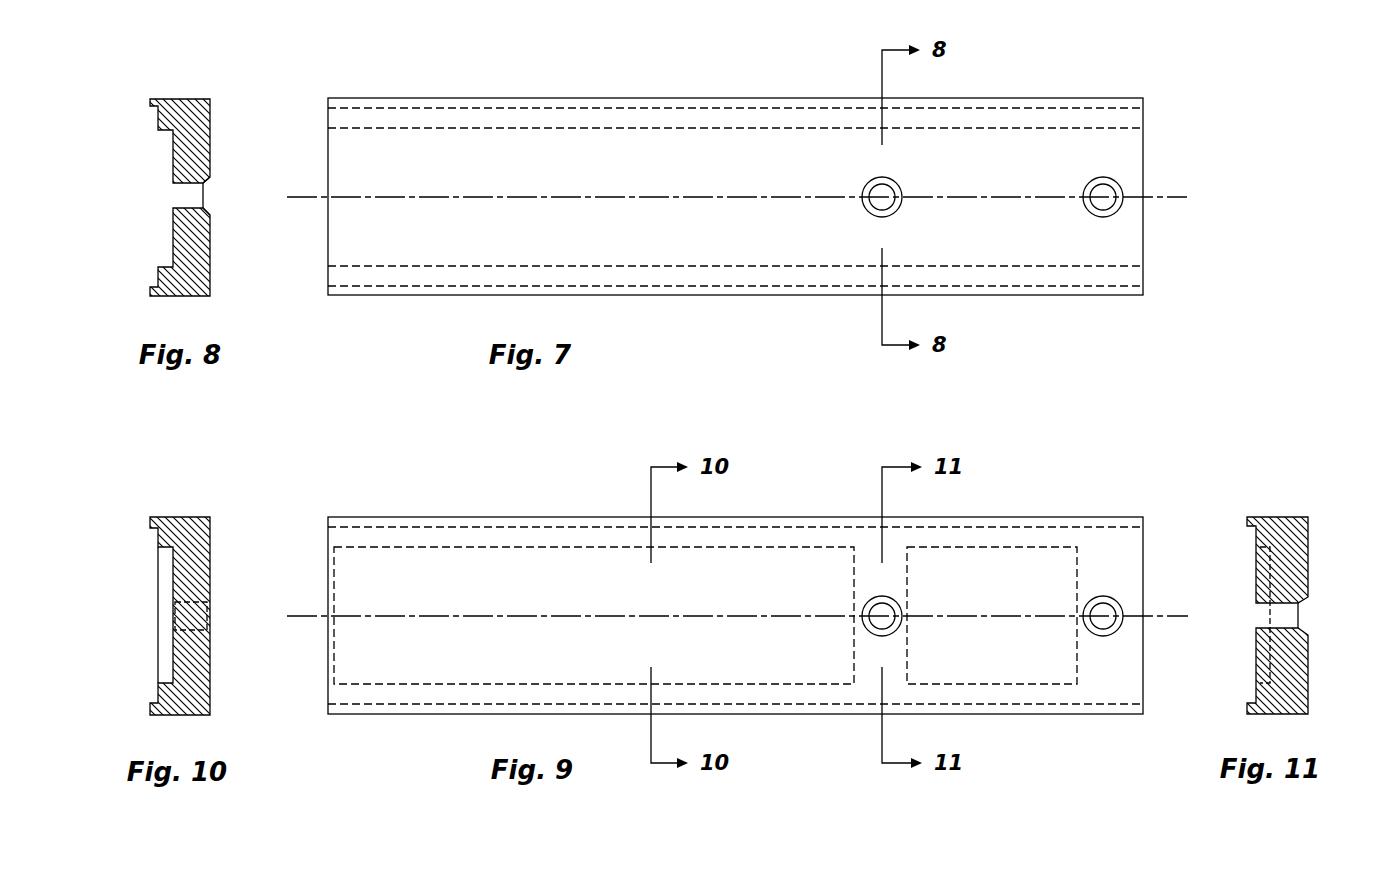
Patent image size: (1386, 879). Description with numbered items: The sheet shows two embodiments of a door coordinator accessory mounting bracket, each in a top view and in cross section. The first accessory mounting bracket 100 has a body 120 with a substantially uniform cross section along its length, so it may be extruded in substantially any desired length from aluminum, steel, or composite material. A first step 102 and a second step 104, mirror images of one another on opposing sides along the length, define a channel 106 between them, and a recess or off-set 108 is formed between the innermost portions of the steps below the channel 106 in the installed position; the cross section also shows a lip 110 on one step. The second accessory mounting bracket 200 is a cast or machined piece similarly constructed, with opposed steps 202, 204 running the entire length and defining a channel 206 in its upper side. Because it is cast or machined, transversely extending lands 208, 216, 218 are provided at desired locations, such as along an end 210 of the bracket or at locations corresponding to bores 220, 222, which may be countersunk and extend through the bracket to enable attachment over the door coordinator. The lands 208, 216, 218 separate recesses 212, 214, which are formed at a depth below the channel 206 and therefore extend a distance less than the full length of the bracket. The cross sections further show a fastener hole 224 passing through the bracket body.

In FIG. 7, the accessory mounting bracket 100 is at (547, 77).
In FIG. 8, the accessory mounting bracket 100 is at (213, 73).
In FIG. 7, the first step 102 is at (328, 116).
In FIG. 8, the first step 102 is at (168, 138).
In FIG. 7, the second step 104 is at (328, 275).
In FIG. 8, the second step 104 is at (170, 264).
In FIG. 7, the channel 106 is at (672, 124).
In FIG. 8, the channel 106 is at (154, 275).
In FIG. 7, the recess or off-set 108 is at (737, 177).
In FIG. 8, the recess or off-set 108 is at (175, 176).
In FIG. 8, the lip 110 is at (158, 120).
In FIG. 8, the body 120 is at (211, 163).
In FIG. 9, the accessory mounting bracket 200 is at (547, 499).
In FIG. 10, the accessory mounting bracket 200 is at (213, 499).
In FIG. 10, the step 202 is at (144, 537).
In FIG. 10, the step 204 is at (144, 703).
In FIG. 9, the channel 206 is at (854, 707).
In FIG. 10, the channel 206 is at (158, 688).
In FIG. 9, the land 208 is at (327, 667).
In FIG. 9, the end 210 is at (320, 724).
In FIG. 9, the recess 212 is at (1140, 752).
In FIG. 10, the recess 212 is at (170, 590).
In FIG. 9, the recess 214 is at (992, 615).
In FIG. 9, the land 216 is at (867, 562).
In FIG. 9, the land 218 is at (1112, 682).
In FIG. 11, the bore 220 is at (1256, 622).
In FIG. 9, the bore 222 is at (1078, 502).
In FIG. 9, the fastener hole 224 is at (870, 601).
In FIG. 10, the fastener hole 224 is at (210, 639).
In FIG. 11, the fastener hole 224 is at (1310, 612).